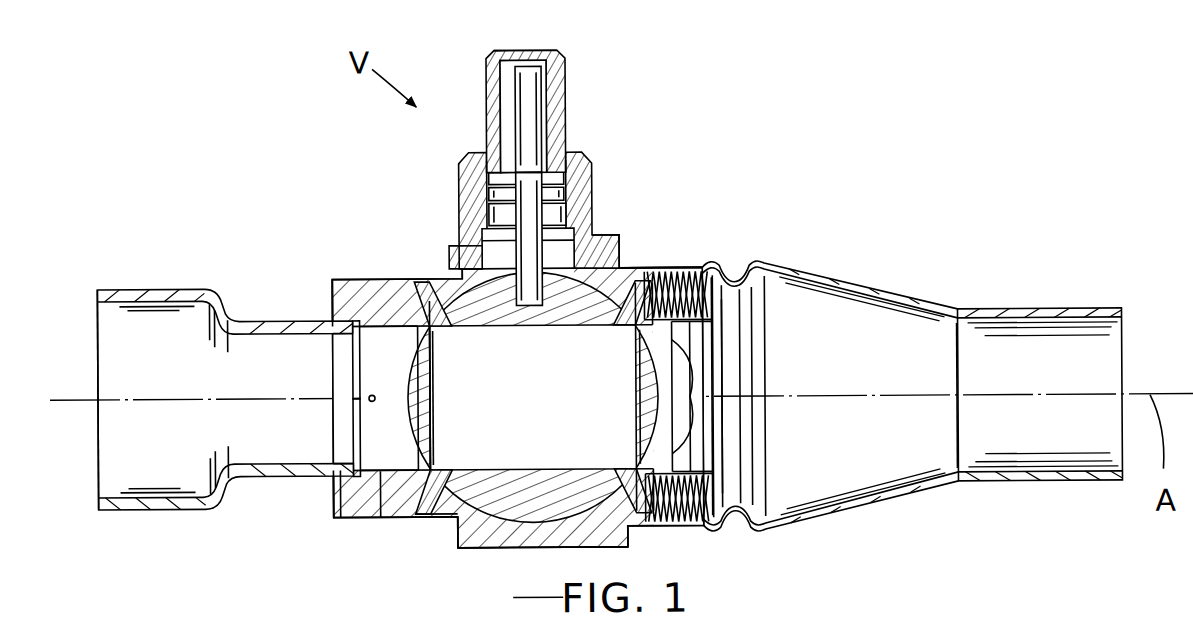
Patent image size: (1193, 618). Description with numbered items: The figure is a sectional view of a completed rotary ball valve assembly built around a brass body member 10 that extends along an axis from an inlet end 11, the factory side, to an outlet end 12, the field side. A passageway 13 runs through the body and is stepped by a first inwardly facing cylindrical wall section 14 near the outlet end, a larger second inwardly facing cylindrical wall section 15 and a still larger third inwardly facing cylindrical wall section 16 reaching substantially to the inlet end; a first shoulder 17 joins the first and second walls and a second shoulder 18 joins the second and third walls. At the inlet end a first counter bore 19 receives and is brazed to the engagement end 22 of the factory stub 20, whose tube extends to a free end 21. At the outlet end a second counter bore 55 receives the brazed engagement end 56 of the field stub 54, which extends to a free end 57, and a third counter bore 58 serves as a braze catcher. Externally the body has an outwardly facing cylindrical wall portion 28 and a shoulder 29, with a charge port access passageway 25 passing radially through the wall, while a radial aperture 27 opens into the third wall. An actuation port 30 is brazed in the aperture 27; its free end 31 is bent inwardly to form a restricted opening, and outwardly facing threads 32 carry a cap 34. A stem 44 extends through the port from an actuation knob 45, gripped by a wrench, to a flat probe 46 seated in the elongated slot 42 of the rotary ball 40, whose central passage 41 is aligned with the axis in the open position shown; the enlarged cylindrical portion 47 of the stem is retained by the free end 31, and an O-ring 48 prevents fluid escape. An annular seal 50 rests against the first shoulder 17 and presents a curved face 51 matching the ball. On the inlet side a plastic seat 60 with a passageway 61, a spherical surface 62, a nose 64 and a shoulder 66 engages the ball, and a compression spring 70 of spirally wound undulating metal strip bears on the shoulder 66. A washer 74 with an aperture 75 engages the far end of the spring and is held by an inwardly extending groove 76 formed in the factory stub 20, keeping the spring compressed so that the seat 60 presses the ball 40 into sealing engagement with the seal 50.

The body member 10 is at (388, 268).
The inlet end 11 is at (638, 262).
The outlet end 12 is at (333, 315).
The passageway 13 is at (383, 462).
The first inwardly facing cylindrical wall section 14 is at (389, 347).
The second inwardly facing cylindrical wall section 15 is at (437, 507).
The third inwardly facing cylindrical wall section 16 is at (500, 549).
The first shoulder 17 is at (398, 486).
The second shoulder 18 is at (460, 286).
The first counter bore 19 is at (622, 548).
The factory stub 20 is at (818, 266).
The free end of factory stub 21 is at (1124, 320).
The engagement end of factory stub 22 is at (540, 305).
The charge port access passageway 25 is at (369, 396).
The radial aperture 27 is at (600, 265).
The outwardly facing cylindrical wall portion 28 is at (343, 517).
The shoulder 29 is at (452, 542).
The actuation port 30 is at (590, 230).
The free end of actuation port 31 is at (492, 170).
The outwardly facing threads 32 is at (472, 208).
The cap 34 is at (488, 76).
The rotary ball 40 is at (636, 428).
The central passage 41 is at (532, 397).
The elongated slot 42 is at (442, 302).
The stem 44 is at (527, 58).
The actuation knob 45 is at (535, 98).
The flat probe 46 is at (499, 447).
The enlarged cylindrical portion 47 is at (524, 185).
The O-ring 48 is at (488, 212).
The annular seal 50 is at (418, 288).
The curved face 51 is at (452, 335).
The field stub 54 is at (194, 366).
The second counter bore 55 is at (333, 500).
The engagement end 56 is at (355, 345).
The free end 57 is at (98, 453).
The third counter bore 58 is at (353, 441).
The seat 60 is at (645, 340).
The passageway 61 is at (710, 371).
The spherical surface 62 is at (640, 302).
The nose 64 is at (673, 341).
The shoulder 66 is at (642, 285).
The compression spring 70 is at (716, 532).
The washer 74 is at (702, 272).
The aperture 75 is at (712, 456).
The inwardly extending groove 76 is at (750, 514).